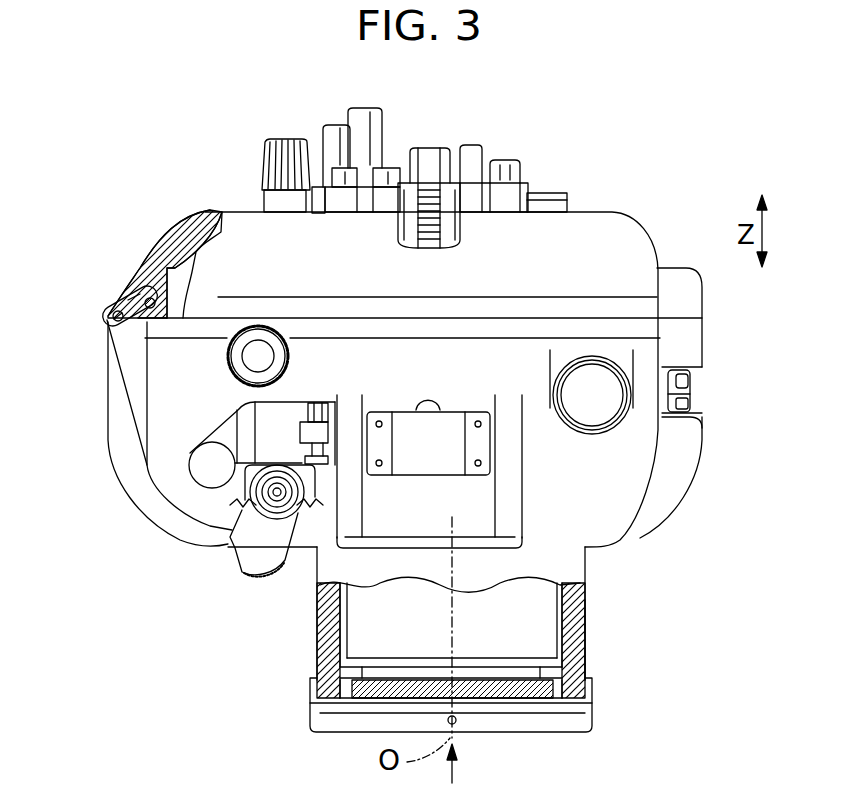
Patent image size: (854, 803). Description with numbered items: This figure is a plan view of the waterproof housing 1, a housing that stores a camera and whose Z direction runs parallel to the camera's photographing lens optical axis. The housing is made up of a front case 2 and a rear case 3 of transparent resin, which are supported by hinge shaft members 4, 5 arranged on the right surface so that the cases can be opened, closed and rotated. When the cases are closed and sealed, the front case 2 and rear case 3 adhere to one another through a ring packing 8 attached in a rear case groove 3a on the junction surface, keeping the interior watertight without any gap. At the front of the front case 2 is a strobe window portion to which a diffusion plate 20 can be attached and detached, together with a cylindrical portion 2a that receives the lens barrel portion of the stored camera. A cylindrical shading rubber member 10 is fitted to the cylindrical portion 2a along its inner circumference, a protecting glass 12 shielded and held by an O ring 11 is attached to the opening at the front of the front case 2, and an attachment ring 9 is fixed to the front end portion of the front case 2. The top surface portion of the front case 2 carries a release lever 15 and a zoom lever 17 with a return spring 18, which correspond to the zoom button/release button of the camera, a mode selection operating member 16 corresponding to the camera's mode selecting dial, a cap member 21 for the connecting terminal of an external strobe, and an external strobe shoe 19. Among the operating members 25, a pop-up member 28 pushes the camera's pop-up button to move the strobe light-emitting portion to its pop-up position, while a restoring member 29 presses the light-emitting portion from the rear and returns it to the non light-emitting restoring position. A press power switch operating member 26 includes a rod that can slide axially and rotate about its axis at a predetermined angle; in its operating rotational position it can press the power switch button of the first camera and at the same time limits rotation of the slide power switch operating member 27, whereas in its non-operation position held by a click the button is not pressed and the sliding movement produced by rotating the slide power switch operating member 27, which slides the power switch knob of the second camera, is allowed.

The waterproof housing 1 is at (163, 134).
The front case 2 is at (147, 455).
The cylindrical portion 2a is at (585, 642).
The rear case 3 is at (168, 230).
The rear case groove 3a is at (138, 303).
The hinge shaft member 4 is at (105, 313).
The hinge shaft member 5 is at (705, 373).
The ring packing 8 is at (150, 298).
The attachment ring 9 is at (600, 690).
The cylindrical shading rubber member 10 is at (317, 640).
The O ring 11 is at (592, 697).
The protecting glass 12 is at (525, 703).
The release lever 15 is at (188, 478).
The mode selection operating member 16 is at (226, 357).
The zoom lever 17 is at (243, 562).
The return spring 18 is at (236, 508).
The external strobe shoe 19 is at (483, 452).
The diffusion plate 20 is at (490, 538).
The cap member 21 is at (603, 407).
The operating members 25 is at (598, 101).
The press power switch operating member 26 is at (527, 183).
The slide power switch operating member 27 is at (263, 162).
The pop-up member 28 is at (332, 168).
The restoring member 29 is at (430, 148).